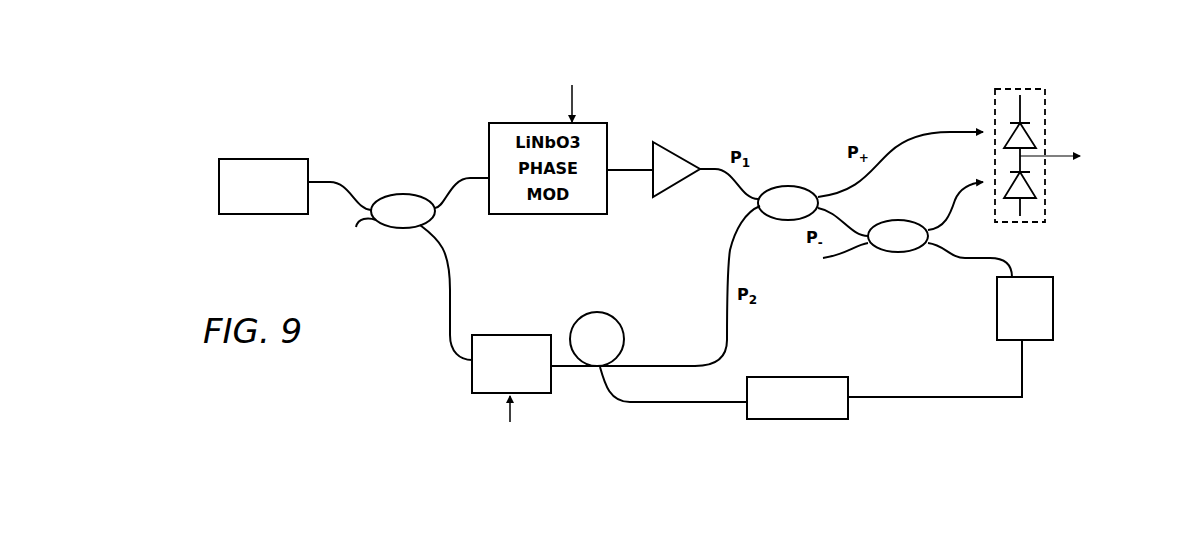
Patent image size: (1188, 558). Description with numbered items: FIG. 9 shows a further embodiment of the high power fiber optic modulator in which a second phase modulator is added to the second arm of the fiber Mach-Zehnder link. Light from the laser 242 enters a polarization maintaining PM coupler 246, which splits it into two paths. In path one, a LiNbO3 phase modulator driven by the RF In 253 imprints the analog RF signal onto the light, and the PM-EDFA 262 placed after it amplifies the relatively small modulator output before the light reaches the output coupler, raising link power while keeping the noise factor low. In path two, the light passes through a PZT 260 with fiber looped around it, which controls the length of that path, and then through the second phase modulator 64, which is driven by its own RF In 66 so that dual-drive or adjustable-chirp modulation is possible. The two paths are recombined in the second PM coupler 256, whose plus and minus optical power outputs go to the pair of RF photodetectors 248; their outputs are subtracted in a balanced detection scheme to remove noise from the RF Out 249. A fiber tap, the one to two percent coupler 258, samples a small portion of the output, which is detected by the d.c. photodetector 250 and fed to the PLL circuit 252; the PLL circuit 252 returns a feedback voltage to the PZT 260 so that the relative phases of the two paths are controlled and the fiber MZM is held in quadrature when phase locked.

The laser 242 is at (281, 158).
The PM coupler 246 is at (396, 195).
The RF In 253 is at (575, 58).
The PM-EDFA 262 is at (673, 187).
The PM coupler 256 is at (825, 183).
The 1–2% coupler 258 is at (893, 220).
The RF photodetectors 248 is at (1018, 88).
The RF Out 249 is at (1108, 141).
The d.c. photodetector 250 is at (1055, 303).
The PLL circuit 252 is at (805, 376).
The PZT 260 is at (612, 318).
The second phase modulator 64 is at (501, 333).
The RF input 66 is at (547, 438).